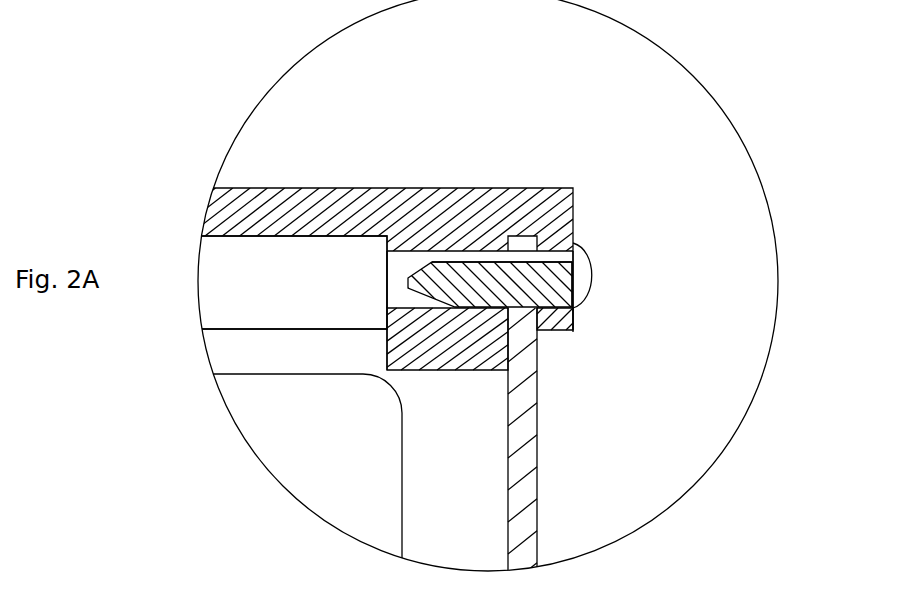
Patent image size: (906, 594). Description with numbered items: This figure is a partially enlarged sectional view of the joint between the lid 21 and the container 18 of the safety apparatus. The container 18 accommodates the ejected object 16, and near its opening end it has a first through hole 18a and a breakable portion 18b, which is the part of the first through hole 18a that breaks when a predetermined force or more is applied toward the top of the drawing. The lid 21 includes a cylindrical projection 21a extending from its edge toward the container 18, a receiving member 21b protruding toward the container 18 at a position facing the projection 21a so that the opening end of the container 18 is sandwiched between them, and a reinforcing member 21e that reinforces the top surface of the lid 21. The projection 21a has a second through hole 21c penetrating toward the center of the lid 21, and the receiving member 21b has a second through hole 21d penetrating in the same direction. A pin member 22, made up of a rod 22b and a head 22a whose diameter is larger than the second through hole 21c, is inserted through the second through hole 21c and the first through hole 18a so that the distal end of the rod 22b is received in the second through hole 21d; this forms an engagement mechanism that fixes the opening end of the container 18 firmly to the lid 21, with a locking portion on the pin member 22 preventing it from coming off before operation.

The ejected object 16 is at (322, 459).
The container 18 is at (523, 457).
The first through hole 18a is at (578, 287).
The breakable portion 18b is at (536, 245).
The lid 21 is at (573, 188).
The projection 21a is at (553, 328).
The receiving member 21b is at (457, 352).
The second through hole 21c is at (578, 278).
The second through hole 21d is at (394, 272).
The reinforcing member 21e is at (300, 265).
The pin member 22 is at (480, 272).
The head 22a is at (580, 283).
The rod 22b is at (486, 272).